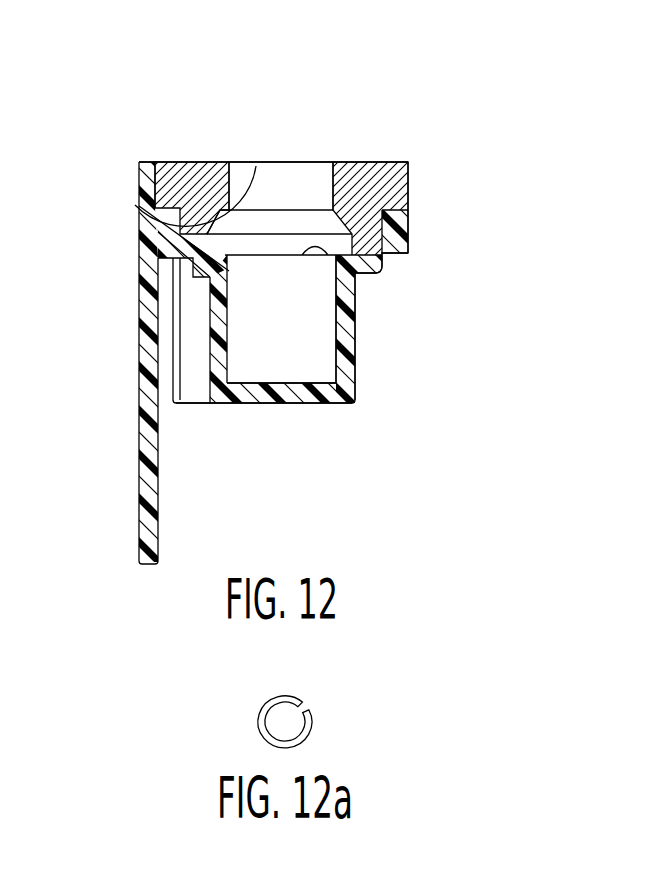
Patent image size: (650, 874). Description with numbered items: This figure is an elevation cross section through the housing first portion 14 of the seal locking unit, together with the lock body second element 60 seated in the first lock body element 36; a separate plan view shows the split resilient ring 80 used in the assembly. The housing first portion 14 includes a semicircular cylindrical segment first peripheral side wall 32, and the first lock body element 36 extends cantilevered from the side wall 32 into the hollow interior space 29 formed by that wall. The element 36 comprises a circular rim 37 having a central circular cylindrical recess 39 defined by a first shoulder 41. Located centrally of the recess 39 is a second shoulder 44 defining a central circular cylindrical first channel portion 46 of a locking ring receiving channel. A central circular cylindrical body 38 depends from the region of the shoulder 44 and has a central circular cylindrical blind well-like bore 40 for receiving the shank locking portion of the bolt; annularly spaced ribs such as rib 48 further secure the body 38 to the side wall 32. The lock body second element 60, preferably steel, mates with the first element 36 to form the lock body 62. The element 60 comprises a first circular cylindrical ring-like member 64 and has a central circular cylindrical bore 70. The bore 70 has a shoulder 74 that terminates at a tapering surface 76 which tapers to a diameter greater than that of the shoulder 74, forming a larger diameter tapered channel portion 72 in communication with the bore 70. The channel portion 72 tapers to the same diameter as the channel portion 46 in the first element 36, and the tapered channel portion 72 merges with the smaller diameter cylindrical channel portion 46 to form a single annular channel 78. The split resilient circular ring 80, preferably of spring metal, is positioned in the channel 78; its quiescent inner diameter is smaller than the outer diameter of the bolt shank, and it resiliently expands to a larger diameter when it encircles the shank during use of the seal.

In FIG. 12, the housing first portion 14 is at (390, 323).
In FIG. 12, the hollow interior space 29 is at (233, 434).
In FIG. 12, the first peripheral side wall 32 is at (139, 478).
In FIG. 12, the lock body element 36 is at (124, 214).
In FIG. 12, the circular rim 37 is at (139, 206).
In FIG. 12, the central circular cylindrical body 38 is at (357, 358).
In FIG. 12, the central circular cylindrical recess 39 is at (365, 229).
In FIG. 12, the blind well-like bore 40 is at (296, 366).
In FIG. 12, the first shoulder 41 is at (380, 256).
In FIG. 12, the second shoulder 44 is at (337, 312).
In FIG. 12, the first channel portion 46 is at (256, 166).
In FIG. 12, the rib 48 is at (180, 352).
In FIG. 12, the lock body second element 60 is at (319, 150).
In FIG. 12, the lock body 62 is at (423, 165).
In FIG. 12, the first circular cylindrical ring-like member 64 is at (343, 161).
In FIG. 12, the central circular cylindrical bore 70 is at (238, 161).
In FIG. 12, the tapered channel portion 72 is at (218, 301).
In FIG. 12, the shoulder 74 is at (260, 232).
In FIG. 12, the tapering surface 76 is at (349, 234).
In FIG. 12, the annular channel 78 is at (294, 234).
In FIG. 12A, the split resilient ring 80 is at (312, 718).